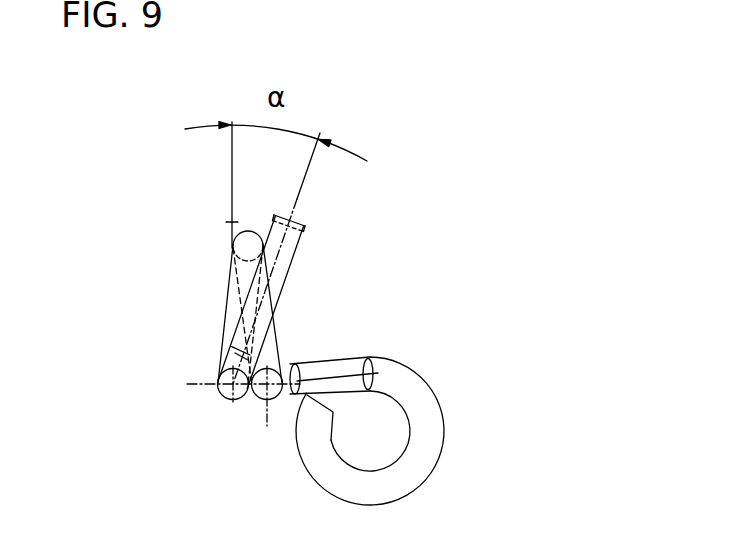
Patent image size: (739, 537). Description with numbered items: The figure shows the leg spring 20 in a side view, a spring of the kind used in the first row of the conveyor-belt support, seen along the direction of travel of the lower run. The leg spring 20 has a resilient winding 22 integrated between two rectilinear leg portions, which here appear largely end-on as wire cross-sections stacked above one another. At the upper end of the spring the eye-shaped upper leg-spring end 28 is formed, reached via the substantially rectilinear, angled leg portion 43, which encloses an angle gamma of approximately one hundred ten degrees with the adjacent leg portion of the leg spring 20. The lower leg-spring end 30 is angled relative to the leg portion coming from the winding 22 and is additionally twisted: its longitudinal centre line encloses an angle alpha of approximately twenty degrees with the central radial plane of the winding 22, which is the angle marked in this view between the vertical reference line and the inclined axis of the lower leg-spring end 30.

The leg spring 20 is at (372, 323).
The resilient winding 22 is at (227, 319).
The upper leg-spring end 28 is at (423, 453).
The lower leg-spring end 30 is at (296, 238).
The angled leg portion 43 is at (323, 362).